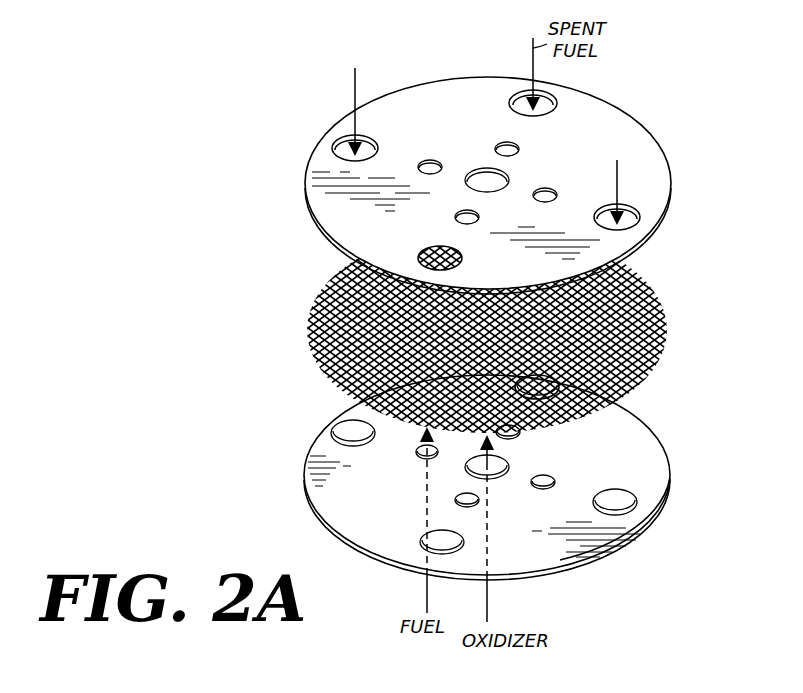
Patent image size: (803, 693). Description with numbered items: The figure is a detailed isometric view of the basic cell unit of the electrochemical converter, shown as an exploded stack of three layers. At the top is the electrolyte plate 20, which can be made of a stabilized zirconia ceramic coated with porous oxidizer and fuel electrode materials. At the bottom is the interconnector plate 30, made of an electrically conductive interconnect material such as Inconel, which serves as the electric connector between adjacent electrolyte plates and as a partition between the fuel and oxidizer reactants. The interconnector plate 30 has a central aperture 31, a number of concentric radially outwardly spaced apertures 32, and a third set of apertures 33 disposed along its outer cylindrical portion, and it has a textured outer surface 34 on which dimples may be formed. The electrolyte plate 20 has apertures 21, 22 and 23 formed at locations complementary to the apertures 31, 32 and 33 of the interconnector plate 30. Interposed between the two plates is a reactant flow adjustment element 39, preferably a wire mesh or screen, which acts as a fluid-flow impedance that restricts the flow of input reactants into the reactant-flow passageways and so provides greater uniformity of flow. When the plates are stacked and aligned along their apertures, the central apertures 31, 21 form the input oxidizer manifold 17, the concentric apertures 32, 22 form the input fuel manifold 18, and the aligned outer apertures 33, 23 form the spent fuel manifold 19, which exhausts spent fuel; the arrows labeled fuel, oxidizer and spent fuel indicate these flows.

The input oxidizer manifold 17 is at (470, 470).
The input fuel manifold 18 is at (480, 503).
The spent fuel manifold 19 is at (432, 539).
The electrolyte plate 20 is at (336, 129).
The aperture 21 is at (497, 182).
The aperture 22 is at (430, 158).
The aperture 23 is at (640, 215).
The interconnector plate 30 is at (668, 452).
The central aperture 31 is at (466, 460).
The concentric radially outwardly spaced apertures 32 is at (547, 476).
The third set of apertures 33 is at (637, 500).
The textured outer surface 34 is at (622, 542).
The reactant flow adjustment element 39 is at (648, 289).